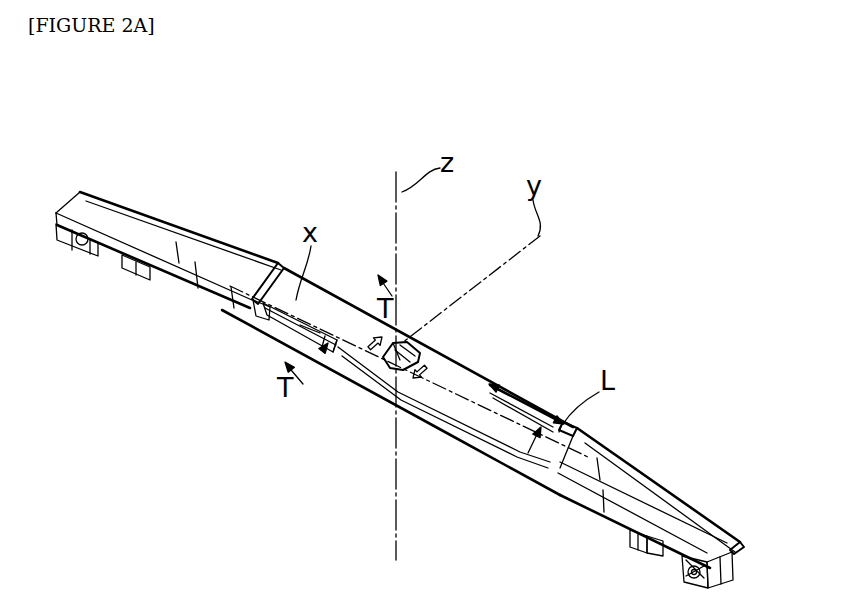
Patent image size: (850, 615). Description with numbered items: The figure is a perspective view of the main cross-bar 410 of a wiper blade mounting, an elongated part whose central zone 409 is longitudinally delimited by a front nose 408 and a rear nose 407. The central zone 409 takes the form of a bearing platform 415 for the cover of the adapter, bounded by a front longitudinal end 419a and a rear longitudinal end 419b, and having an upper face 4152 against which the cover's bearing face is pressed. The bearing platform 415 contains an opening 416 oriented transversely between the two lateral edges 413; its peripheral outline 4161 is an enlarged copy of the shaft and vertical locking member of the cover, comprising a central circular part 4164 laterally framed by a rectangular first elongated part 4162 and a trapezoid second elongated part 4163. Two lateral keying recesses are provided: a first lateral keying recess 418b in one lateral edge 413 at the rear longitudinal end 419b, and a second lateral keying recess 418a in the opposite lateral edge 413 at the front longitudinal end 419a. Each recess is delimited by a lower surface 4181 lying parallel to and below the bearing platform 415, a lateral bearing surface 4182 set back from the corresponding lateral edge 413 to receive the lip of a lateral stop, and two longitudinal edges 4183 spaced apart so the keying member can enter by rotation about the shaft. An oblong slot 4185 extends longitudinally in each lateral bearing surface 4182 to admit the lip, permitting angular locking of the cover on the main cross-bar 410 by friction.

The main cross-bar 410 is at (134, 172).
The front nose 408 is at (140, 212).
The lateral bearing surface 4182 is at (298, 318).
The front longitudinal end 419a is at (260, 303).
The upper face 4152 is at (333, 318).
The second lateral keying recess 418a is at (318, 312).
The second elongated part 4163 is at (400, 335).
The opening 416 is at (418, 345).
The peripheral outline 4161 is at (455, 340).
The first elongated part 4162 is at (393, 372).
The central zone 409 is at (467, 390).
The bearing platform 415 is at (482, 385).
The circular part 4164 is at (414, 385).
The longitudinal edges 4183 is at (493, 386).
The lower surface 4181 is at (288, 345).
The oblong slot 4185 is at (330, 356).
The first lateral keying recess 418b is at (520, 450).
The rear longitudinal end 419b is at (592, 456).
The rear nose 407 is at (702, 514).
The lateral edges 413 is at (545, 473).